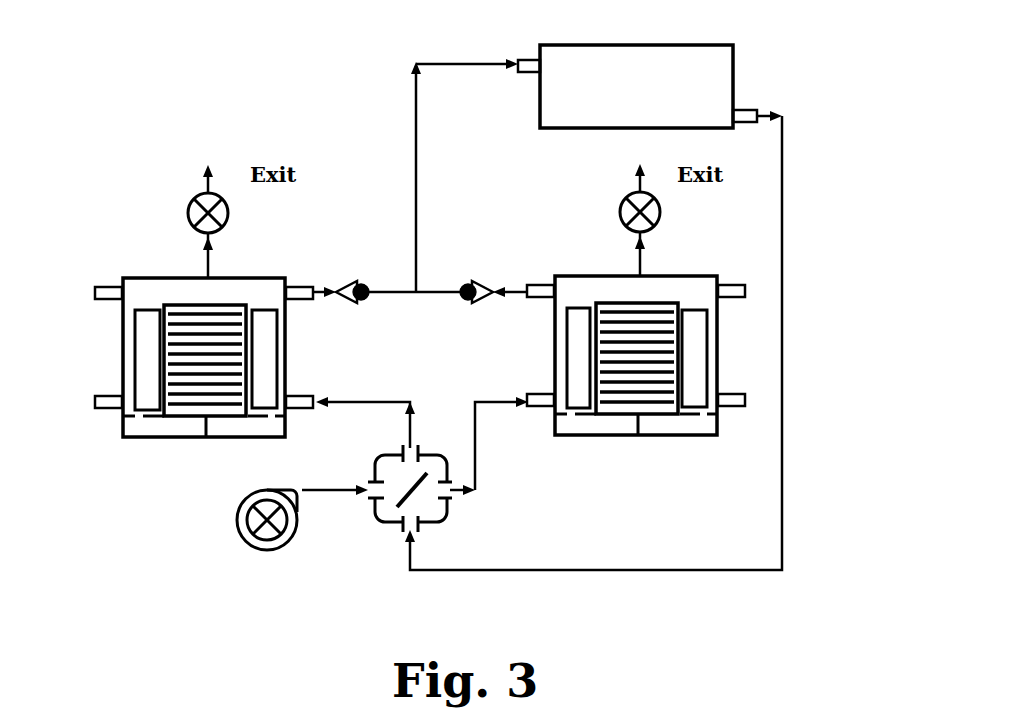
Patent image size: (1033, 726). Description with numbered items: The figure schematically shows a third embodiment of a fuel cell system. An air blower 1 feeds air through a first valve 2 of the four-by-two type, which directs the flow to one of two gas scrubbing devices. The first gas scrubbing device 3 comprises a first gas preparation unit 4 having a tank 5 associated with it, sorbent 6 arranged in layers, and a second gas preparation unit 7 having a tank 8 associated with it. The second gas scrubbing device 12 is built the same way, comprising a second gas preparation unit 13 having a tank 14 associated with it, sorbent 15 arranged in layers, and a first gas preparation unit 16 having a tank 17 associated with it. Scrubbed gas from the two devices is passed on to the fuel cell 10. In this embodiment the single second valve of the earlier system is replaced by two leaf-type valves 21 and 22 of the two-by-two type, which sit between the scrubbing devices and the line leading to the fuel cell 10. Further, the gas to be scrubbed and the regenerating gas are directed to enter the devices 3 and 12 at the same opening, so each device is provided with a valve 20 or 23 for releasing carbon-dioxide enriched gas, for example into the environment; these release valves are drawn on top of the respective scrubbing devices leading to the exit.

The air blower 1 is at (250, 524).
The first valve 2 is at (392, 517).
The first gas scrubbing device 3 is at (687, 361).
The first gas preparation unit 4 is at (578, 358).
The tank 5 is at (582, 428).
The sorbent 6 is at (640, 367).
The second gas preparation unit 7 is at (688, 353).
The tank 8 is at (670, 423).
The fuel cell 10 is at (725, 60).
The second gas scrubbing device 12 is at (185, 369).
The second gas preparation unit 13 is at (147, 345).
The tank 14 is at (193, 428).
The sorbent 15 is at (197, 352).
The first gas preparation unit 16 is at (272, 358).
The tank 17 is at (235, 422).
The valve 20 is at (620, 205).
The leaf-type valve 21 is at (472, 280).
The leaf-type valve 22 is at (348, 281).
The valve 23 is at (197, 200).